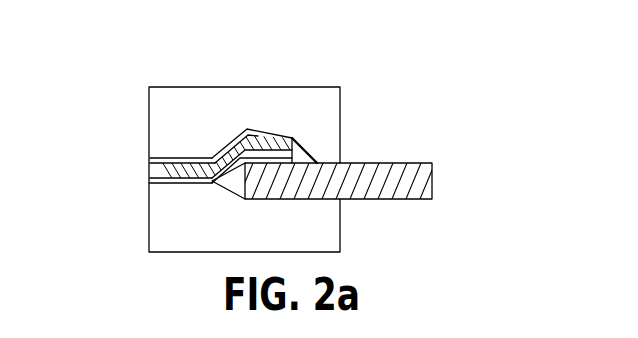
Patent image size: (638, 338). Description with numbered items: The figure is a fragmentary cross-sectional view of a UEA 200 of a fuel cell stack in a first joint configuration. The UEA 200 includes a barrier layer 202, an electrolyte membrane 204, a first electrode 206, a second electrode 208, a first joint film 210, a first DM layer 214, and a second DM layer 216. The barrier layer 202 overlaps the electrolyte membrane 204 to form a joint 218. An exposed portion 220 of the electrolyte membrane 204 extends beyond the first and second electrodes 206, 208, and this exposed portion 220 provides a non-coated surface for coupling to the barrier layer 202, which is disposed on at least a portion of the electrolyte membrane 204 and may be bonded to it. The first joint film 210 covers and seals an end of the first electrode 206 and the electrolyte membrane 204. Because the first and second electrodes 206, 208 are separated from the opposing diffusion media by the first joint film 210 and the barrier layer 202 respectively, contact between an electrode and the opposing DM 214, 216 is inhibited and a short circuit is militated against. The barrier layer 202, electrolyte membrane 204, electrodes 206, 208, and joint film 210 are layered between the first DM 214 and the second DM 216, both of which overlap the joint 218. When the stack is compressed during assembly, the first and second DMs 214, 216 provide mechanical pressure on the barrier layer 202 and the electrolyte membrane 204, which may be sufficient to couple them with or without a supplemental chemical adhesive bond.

The UEA 200 is at (426, 76).
The barrier layer 202 is at (412, 200).
The electrolyte membrane 204 is at (151, 171).
The first electrode 206 is at (151, 160).
The second electrode 208 is at (151, 183).
The first joint film 210 is at (267, 136).
The first DM layer 214 is at (177, 87).
The second DM layer 216 is at (188, 252).
The joint 218 is at (303, 138).
The exposed portion 220 is at (262, 165).